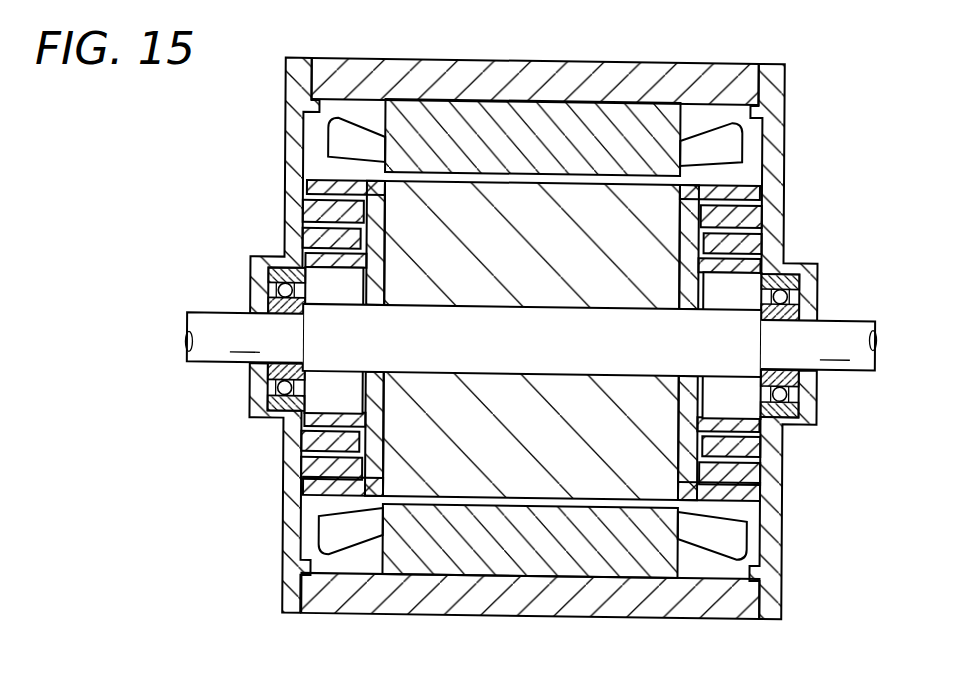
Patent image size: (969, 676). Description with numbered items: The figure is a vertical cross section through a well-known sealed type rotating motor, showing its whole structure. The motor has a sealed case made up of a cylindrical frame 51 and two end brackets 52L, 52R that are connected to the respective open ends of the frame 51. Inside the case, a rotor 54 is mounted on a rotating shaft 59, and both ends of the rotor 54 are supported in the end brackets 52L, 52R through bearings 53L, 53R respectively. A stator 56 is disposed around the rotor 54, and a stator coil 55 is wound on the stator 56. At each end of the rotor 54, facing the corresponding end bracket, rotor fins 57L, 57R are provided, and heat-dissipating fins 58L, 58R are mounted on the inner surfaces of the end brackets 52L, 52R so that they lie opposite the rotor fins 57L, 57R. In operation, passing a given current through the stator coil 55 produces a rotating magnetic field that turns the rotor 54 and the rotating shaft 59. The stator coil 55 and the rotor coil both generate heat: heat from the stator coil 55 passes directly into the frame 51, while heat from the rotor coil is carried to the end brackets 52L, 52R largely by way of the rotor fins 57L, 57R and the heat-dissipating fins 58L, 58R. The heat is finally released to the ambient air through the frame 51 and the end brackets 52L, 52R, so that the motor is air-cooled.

The cylindrical frame 51 is at (538, 64).
The end bracket 52L is at (285, 168).
The end bracket 52R is at (783, 178).
The bearing 53L is at (267, 372).
The bearing 53R is at (813, 385).
The rotor 54 is at (564, 455).
The stator coil 55 is at (340, 143).
The stator 56 is at (612, 140).
The rotor fin 57L is at (322, 232).
The rotor fin 57R is at (760, 240).
The heat-dissipating fin 58L is at (340, 212).
The heat-dissipating fin 58R is at (735, 215).
The rotating shaft 59 is at (853, 368).